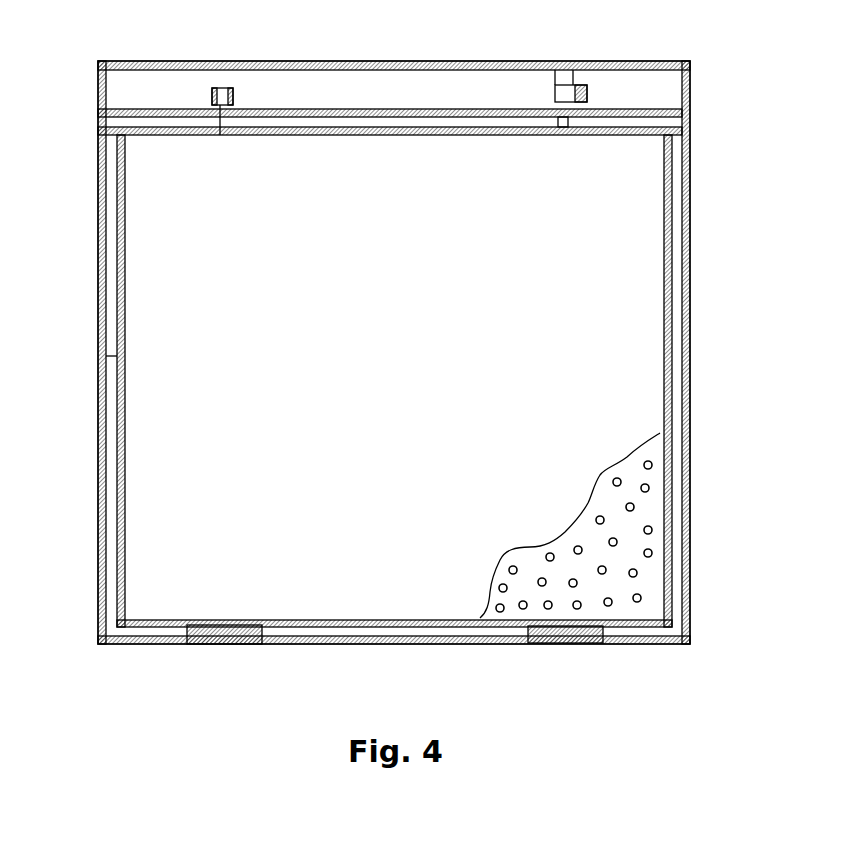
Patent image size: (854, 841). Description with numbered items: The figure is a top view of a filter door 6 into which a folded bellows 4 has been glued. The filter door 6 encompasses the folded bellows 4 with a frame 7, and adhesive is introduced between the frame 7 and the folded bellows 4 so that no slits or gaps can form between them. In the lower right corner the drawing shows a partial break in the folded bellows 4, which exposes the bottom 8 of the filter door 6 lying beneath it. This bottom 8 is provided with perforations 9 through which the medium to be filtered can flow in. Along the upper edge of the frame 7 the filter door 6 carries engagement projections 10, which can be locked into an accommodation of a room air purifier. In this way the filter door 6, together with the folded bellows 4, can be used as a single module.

The folded bellows 4 is at (613, 325).
The filter door 6 is at (100, 543).
The frame 7 is at (455, 118).
The bottom 8 is at (657, 583).
The perforations 9 is at (648, 527).
The engagement projections 10 is at (220, 135).